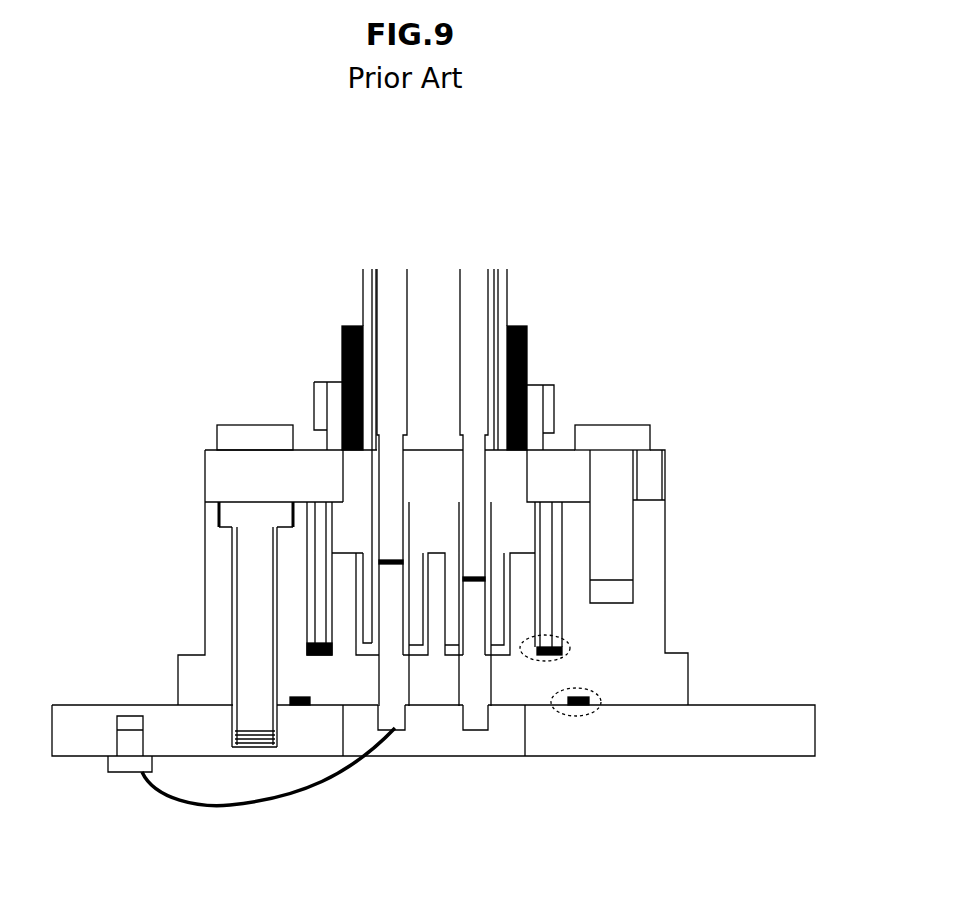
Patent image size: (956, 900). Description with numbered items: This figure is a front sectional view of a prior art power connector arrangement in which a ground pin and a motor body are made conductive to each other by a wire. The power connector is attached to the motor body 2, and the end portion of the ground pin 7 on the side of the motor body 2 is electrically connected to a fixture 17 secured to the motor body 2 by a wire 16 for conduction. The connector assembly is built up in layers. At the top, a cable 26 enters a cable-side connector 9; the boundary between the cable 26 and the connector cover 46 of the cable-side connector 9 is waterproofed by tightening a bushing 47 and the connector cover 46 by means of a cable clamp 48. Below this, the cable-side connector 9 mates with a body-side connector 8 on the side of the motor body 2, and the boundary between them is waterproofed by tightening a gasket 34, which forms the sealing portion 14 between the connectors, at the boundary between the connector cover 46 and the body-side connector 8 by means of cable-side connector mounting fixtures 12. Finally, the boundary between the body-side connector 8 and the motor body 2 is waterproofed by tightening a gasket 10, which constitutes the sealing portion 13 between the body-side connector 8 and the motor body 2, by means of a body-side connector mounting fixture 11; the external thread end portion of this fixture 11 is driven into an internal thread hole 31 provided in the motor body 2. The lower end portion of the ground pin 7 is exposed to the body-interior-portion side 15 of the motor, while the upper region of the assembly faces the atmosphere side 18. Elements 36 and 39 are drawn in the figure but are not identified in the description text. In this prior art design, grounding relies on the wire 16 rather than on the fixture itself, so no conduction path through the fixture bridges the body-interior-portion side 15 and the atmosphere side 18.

The motor body 2 is at (735, 706).
The ground pin 7 is at (389, 680).
The body-side connector 8 is at (650, 533).
The cable-side connector 9 is at (518, 483).
The gasket 10 is at (300, 707).
The body-side connector mounting fixture 11 is at (198, 628).
The cable-side connector mounting fixtures 12 is at (243, 425).
The sealing portion 13 is at (577, 718).
The sealing portion 14 is at (525, 731).
The body-interior-portion side 15 is at (433, 725).
The wire 16 is at (283, 800).
The fixture 17 is at (122, 758).
The atmosphere side 18 is at (658, 546).
The cable 26 is at (510, 278).
The internal thread hole 31 is at (237, 740).
The gasket 34 is at (537, 658).
The shaft 36 is at (390, 278).
The shaft 39 is at (478, 278).
The connector cover 46 is at (315, 453).
The bushing 47 is at (343, 325).
The cable clamp 48 is at (316, 381).